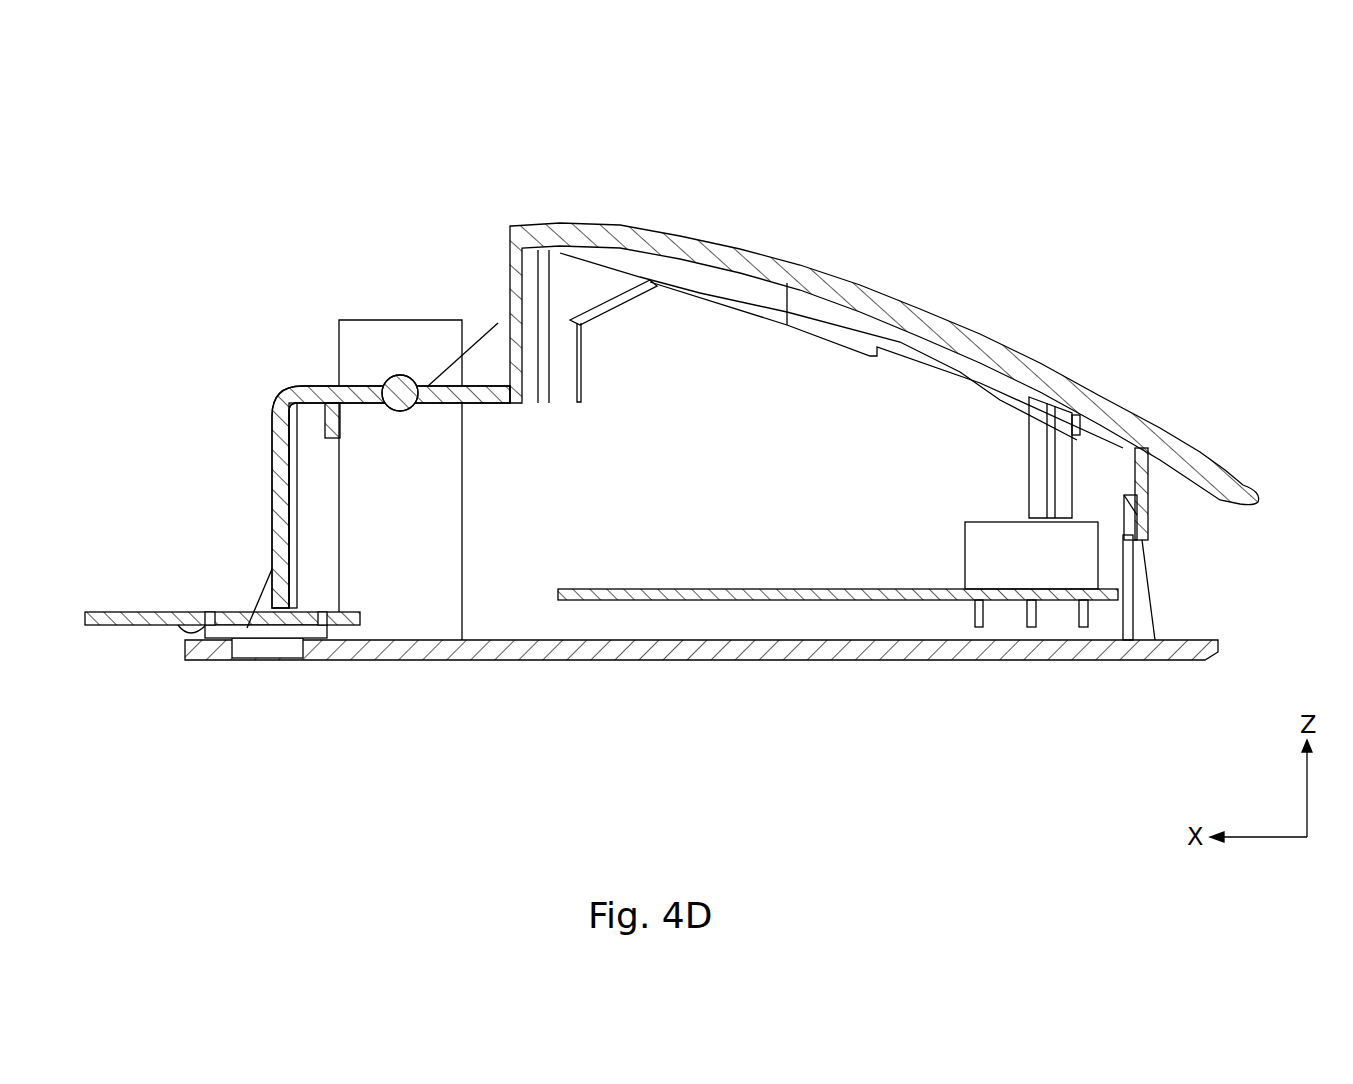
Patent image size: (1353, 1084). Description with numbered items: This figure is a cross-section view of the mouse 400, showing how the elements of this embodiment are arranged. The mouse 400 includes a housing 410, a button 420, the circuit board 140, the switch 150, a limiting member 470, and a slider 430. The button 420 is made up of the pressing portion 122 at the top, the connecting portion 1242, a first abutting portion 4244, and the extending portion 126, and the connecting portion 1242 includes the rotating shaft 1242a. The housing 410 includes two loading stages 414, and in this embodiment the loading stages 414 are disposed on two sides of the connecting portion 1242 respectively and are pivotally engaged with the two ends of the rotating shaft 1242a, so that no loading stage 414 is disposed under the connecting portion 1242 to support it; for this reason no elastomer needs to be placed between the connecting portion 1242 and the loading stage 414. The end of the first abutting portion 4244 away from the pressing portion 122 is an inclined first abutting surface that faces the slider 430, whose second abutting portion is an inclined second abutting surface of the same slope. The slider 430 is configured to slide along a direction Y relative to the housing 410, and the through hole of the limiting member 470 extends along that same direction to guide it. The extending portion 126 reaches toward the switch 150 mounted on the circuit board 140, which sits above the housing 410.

The mouse 400 is at (167, 84).
The button 420 is at (922, 160).
The first abutting portion 4244 is at (278, 468).
The connecting portion 1242 is at (476, 390).
The rotating shaft 1242a is at (403, 410).
The pressing portion 122 is at (566, 242).
The extending portion 126 is at (1035, 468).
The limiting member 470 is at (123, 618).
The slider 430 is at (267, 618).
The loading stage 414 is at (400, 618).
The housing 410 is at (490, 652).
The circuit board 140 is at (757, 597).
The switch 150 is at (1005, 577).